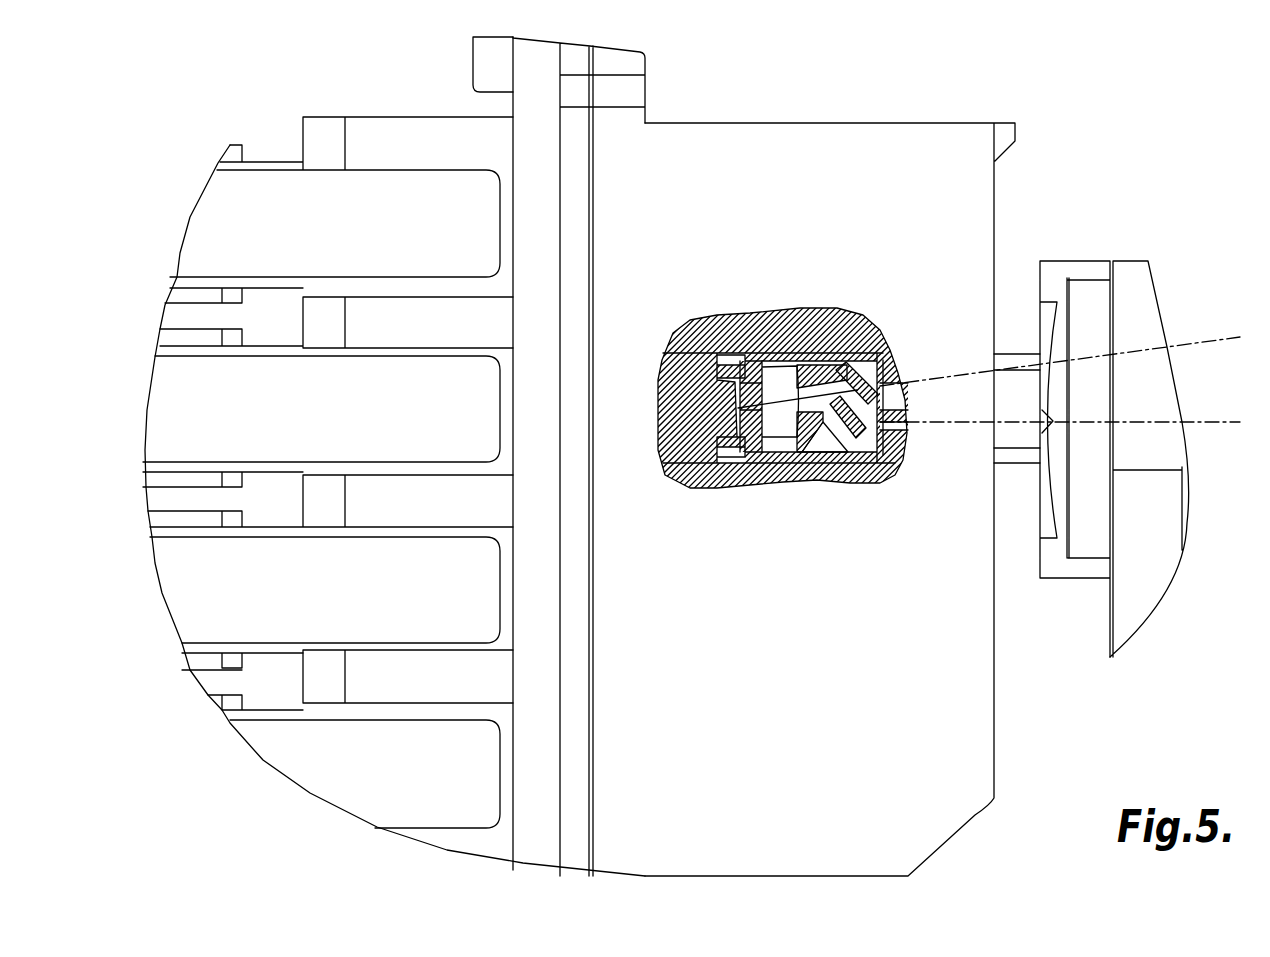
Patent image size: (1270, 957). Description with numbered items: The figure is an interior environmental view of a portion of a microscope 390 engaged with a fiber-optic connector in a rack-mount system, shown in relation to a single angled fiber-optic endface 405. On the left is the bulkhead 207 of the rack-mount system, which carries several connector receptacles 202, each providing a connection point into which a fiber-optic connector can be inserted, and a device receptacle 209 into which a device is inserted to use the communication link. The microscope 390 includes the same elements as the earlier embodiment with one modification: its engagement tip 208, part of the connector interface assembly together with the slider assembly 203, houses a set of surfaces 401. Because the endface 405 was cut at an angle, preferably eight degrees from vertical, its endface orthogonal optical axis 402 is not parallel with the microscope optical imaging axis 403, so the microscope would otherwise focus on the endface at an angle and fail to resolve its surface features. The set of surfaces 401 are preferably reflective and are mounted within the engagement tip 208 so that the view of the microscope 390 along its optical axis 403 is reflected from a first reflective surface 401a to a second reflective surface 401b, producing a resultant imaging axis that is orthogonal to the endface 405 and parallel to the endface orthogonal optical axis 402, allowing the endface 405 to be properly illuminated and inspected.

The connector receptacle 202 is at (385, 170).
The bulkhead 207 is at (647, 90).
The device receptacle 209 is at (995, 758).
The microscope 390 is at (1127, 185).
The set of surfaces 401 is at (782, 335).
The first reflective surface 401a is at (858, 440).
The second reflective surface 401b is at (855, 360).
The endface 405 is at (740, 405).
The endface orthogonal optical axis 402 is at (1210, 340).
The microscope optical imaging axis 403 is at (1210, 423).
The engagement tip 208 is at (1015, 465).
The slider assembly 203 is at (1072, 580).